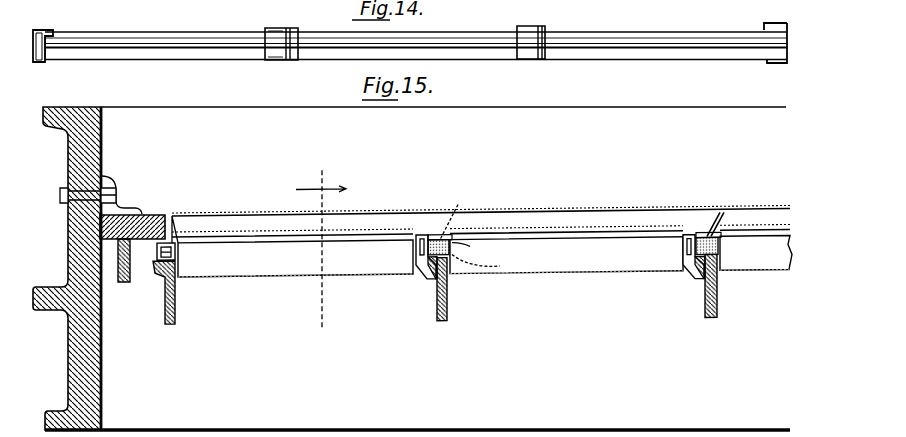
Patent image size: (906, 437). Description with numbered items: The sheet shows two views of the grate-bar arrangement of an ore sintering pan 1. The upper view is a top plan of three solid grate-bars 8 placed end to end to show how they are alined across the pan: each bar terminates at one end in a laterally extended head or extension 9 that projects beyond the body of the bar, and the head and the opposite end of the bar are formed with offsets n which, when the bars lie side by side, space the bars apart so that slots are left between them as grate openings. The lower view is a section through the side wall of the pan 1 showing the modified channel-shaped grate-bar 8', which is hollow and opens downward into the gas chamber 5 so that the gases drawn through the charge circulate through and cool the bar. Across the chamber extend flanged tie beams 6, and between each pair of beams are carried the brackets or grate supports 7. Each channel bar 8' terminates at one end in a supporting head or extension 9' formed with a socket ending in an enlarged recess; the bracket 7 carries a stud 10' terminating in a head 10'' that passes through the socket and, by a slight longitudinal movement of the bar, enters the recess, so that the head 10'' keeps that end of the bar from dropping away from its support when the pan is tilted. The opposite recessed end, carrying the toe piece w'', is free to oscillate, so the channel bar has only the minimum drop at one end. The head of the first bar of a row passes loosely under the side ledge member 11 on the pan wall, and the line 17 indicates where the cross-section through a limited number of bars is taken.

In FIG. 14, the head or extension 9 is at (411, 63).
In FIG. 15, the head or extension 9 is at (144, 278).
In FIG. 14, the offsets n is at (772, 60).
In FIG. 14, the grate-bar 8 is at (416, 66).
In FIG. 15, the pan or treatment vessel 1 is at (63, 239).
In FIG. 15, the side ledge member or bar 11 is at (151, 217).
In FIG. 15, the bracket or grate support 7 is at (165, 321).
In FIG. 15, the channel bar 8' is at (482, 255).
In FIG. 15, the section line 17— 17 is at (321, 252).
In FIG. 15, the stud head 10'' is at (576, 218).
In FIG. 15, the supporting head or extension 9' is at (599, 250).
In FIG. 15, the stud 10' is at (512, 255).
In FIG. 15, the toe piece w'' is at (550, 273).
In FIG. 15, the tie beam 6 is at (688, 276).
In FIG. 15, the gas chamber 5 is at (263, 344).